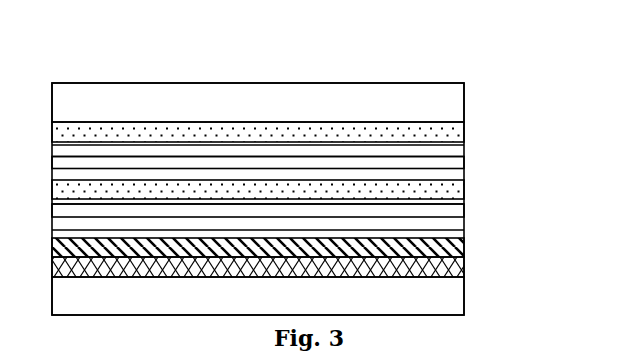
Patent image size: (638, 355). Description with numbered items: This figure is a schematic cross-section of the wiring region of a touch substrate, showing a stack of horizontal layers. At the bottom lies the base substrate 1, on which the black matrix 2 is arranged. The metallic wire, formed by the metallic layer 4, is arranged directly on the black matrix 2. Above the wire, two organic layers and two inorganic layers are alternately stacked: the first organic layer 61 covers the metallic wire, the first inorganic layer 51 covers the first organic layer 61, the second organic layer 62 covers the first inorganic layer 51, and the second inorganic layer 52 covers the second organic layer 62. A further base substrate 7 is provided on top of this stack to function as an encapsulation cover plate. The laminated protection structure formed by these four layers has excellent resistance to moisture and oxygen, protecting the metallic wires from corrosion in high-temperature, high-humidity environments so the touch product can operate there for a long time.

The base substrate 7 is at (422, 97).
The second inorganic layer 52 is at (464, 132).
The second organic layer 62 is at (464, 160).
The first inorganic layer 51 is at (464, 188).
The first organic layer 61 is at (464, 217).
The metallic layer 4 is at (464, 245).
The black matrix 2 is at (464, 268).
The base substrate 1 is at (464, 295).